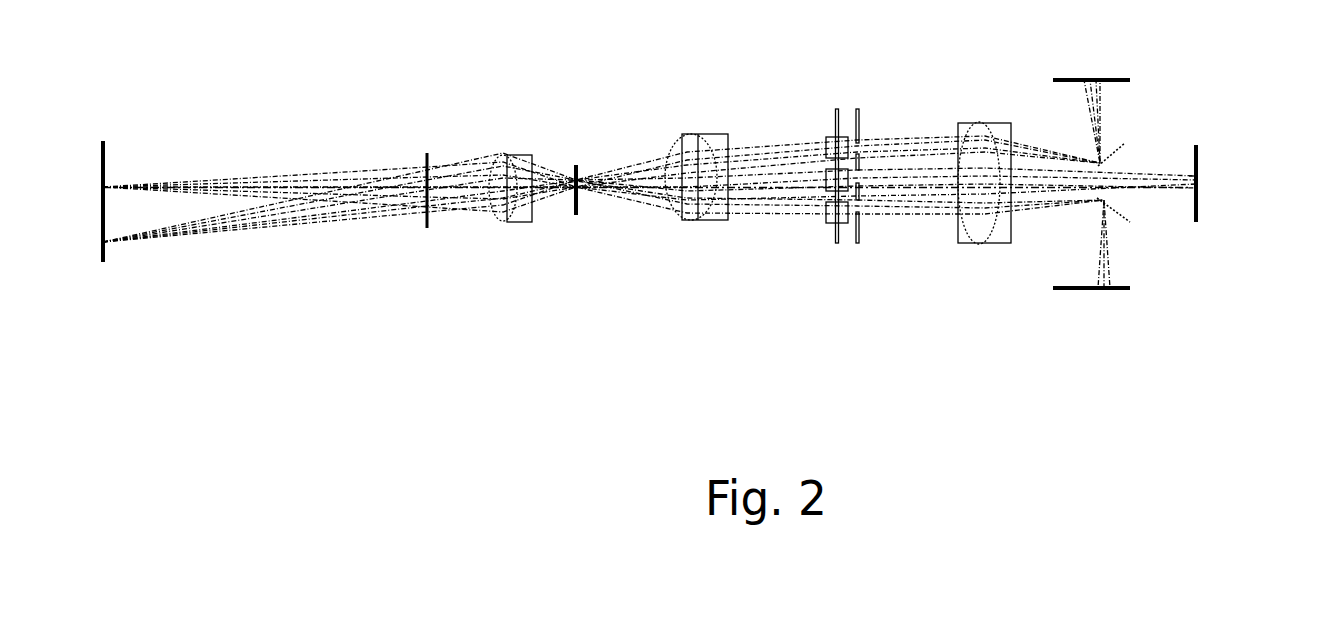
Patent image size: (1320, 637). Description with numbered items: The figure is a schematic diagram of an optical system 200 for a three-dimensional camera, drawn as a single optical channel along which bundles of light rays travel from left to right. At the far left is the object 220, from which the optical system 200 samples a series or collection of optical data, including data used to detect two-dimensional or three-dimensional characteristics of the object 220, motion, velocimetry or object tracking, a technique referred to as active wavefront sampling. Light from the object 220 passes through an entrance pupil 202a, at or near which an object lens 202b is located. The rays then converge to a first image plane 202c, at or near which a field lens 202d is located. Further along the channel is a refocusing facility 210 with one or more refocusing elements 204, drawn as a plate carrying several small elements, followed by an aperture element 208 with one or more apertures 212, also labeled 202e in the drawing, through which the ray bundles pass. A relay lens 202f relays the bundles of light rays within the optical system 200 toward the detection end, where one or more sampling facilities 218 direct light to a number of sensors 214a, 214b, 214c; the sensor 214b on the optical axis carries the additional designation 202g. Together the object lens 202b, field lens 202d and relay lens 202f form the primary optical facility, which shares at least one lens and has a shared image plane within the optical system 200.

The optical system 200 is at (268, 132).
The object 220 is at (104, 257).
The entrance pupil 202a is at (427, 229).
The object lens 202b is at (502, 223).
The first image plane 202c is at (576, 216).
The field lens 202d is at (683, 221).
The refocusing elements 204 is at (824, 140).
The refocusing facility 210 is at (835, 247).
The aperture elements 208 is at (886, 211).
The aperture plate optical element 202e is at (858, 247).
The apertures 212 is at (868, 135).
The relay lens 202f is at (987, 247).
The sensor 214a is at (1097, 78).
The sensor 214b is at (1248, 170).
The detector optical element 202g is at (1200, 153).
The sensor 214c is at (1097, 295).
The sampling facilities 218 is at (1127, 145).